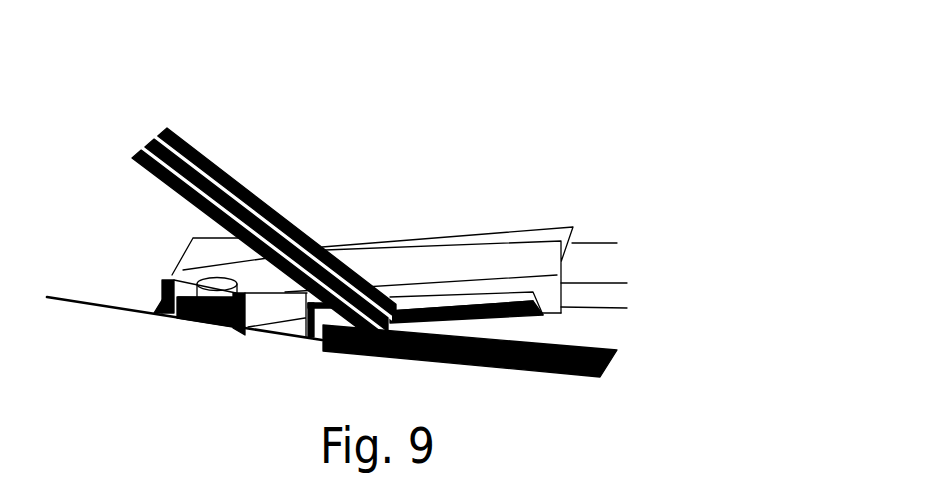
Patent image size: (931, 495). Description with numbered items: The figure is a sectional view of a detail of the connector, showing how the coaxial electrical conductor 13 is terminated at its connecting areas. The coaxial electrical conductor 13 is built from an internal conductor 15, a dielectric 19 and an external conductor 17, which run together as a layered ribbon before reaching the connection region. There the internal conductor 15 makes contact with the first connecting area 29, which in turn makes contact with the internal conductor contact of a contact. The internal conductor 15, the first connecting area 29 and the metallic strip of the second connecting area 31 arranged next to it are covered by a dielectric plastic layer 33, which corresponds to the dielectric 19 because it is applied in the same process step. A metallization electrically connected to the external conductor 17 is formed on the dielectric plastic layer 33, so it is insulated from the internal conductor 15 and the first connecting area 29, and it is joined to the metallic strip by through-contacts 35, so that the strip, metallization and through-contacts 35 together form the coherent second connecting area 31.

The coaxial electrical conductor 13 is at (367, 237).
The internal conductor 15 is at (178, 155).
The external conductor 17 is at (300, 225).
The dielectric 19 is at (247, 203).
The first connecting area 29 is at (601, 342).
The second connecting area 31 is at (421, 273).
The dielectric plastic layer 33 is at (175, 310).
The through-contact 35 is at (207, 280).